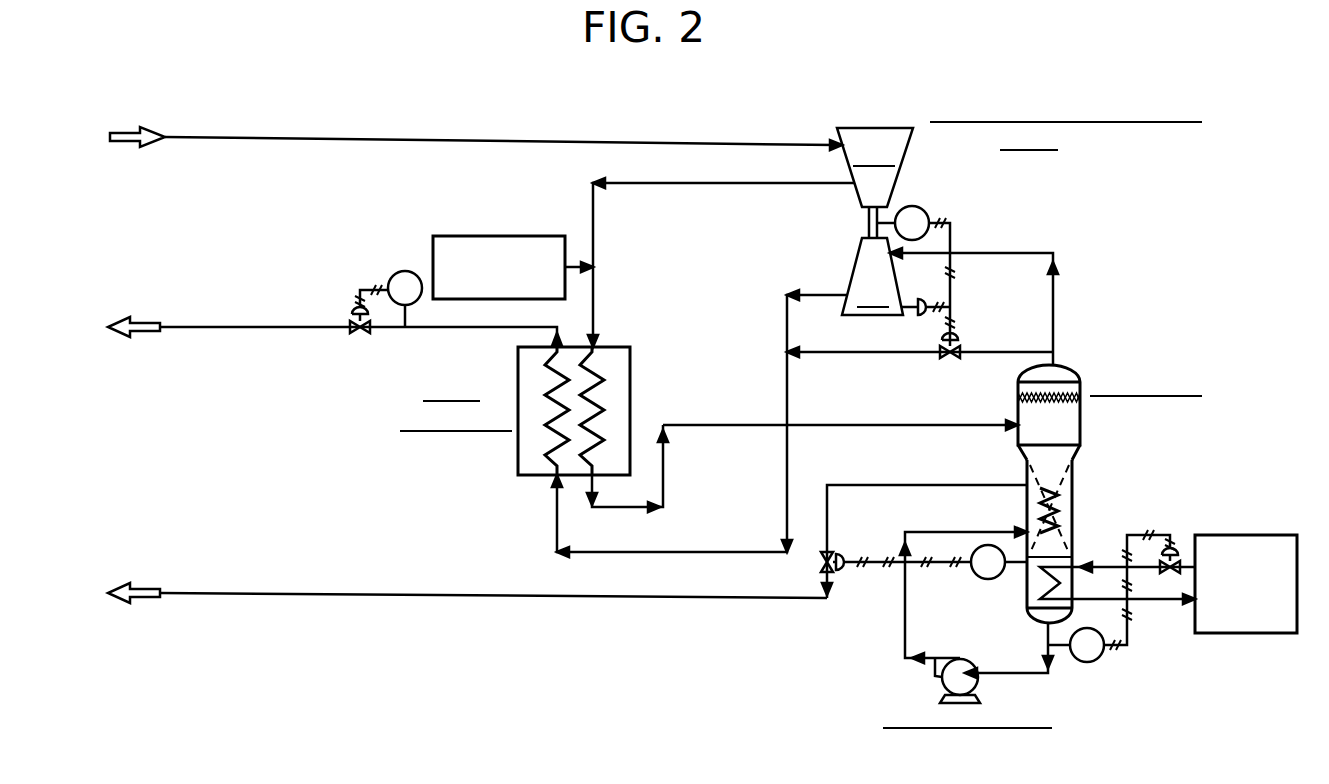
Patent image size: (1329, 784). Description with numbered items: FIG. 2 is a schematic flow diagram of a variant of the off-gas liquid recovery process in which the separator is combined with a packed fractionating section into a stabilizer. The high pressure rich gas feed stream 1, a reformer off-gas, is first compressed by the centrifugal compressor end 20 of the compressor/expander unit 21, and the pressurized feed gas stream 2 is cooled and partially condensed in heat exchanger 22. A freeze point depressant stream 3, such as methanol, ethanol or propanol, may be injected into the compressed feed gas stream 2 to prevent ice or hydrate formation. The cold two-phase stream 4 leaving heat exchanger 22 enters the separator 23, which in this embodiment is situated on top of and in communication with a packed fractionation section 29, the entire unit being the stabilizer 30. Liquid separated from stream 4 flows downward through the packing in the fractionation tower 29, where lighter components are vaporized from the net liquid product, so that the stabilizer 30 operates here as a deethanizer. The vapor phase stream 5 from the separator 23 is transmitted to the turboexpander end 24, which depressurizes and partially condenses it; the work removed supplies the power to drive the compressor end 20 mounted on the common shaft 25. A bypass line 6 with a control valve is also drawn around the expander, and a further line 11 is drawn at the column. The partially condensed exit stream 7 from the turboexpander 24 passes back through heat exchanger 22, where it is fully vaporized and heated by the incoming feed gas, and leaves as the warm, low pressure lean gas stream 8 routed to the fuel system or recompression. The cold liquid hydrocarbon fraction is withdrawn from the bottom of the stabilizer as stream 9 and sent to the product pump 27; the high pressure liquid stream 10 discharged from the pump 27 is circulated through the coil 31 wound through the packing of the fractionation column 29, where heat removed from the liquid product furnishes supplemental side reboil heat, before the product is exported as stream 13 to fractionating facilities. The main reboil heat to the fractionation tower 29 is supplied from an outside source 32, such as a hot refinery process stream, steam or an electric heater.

The reformer off-gas feed stream 1 is at (578, 142).
The pressurized feed gas stream 2 is at (668, 183).
The freeze point depressant stream 3 is at (579, 272).
The cold two-phase stream 4 is at (637, 507).
The vapor phase stream 5 is at (1012, 252).
The expander bypass line with control valve 6 is at (1012, 351).
The partially condensed exit stream 7 is at (641, 552).
The warm lean gas stream 8 is at (345, 331).
The cold liquid hydrocarbon fraction stream 9 is at (1020, 673).
The high pressure liquid stream 10 is at (1000, 532).
The stabilizer liquid draw line 11 is at (945, 485).
The exported liquid product stream 13 is at (646, 598).
The compressor end 20 is at (877, 128).
The compressor/expander unit 21 is at (913, 174).
The heat exchanger 22 is at (518, 458).
The separator 23 is at (1018, 408).
The turboexpander end 24 is at (853, 280).
The common shaft 25 is at (864, 224).
The product pump 27 is at (938, 675).
The packed fractionation section 29 is at (1078, 533).
The stabilizer 30 is at (1110, 494).
The coil 31 is at (1058, 509).
The outside source 32 is at (1258, 536).